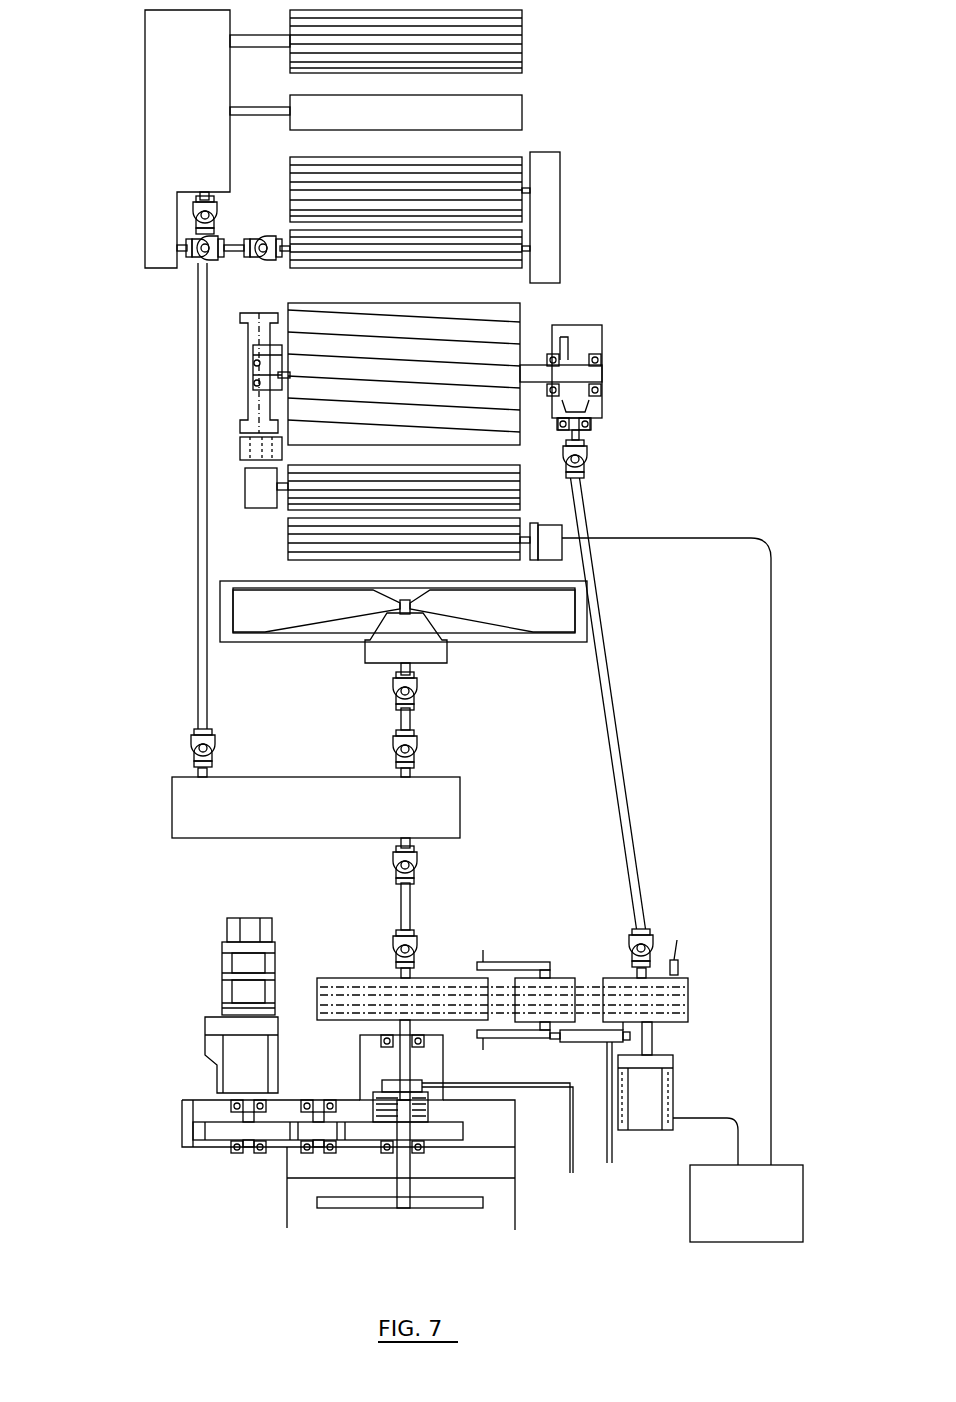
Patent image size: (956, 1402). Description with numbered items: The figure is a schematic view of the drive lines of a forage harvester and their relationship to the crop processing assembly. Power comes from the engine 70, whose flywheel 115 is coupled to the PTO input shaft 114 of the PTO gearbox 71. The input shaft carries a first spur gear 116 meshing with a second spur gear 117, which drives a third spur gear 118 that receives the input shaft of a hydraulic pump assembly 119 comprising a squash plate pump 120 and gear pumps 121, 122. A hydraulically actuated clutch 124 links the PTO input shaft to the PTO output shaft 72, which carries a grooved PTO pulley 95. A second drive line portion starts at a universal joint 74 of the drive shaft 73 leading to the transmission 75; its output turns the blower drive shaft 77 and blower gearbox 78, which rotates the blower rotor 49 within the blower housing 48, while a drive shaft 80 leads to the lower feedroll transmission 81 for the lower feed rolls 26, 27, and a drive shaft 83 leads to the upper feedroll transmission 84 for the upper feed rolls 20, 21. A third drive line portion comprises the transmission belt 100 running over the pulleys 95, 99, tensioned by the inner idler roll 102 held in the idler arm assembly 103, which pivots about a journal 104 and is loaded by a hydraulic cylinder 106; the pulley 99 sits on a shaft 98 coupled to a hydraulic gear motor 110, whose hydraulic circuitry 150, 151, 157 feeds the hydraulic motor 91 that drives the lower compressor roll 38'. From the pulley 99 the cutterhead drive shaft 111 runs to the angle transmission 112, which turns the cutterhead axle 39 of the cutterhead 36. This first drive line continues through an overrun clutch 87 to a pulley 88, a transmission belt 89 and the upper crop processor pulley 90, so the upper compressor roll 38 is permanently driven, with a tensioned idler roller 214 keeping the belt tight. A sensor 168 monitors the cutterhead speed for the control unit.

The lower feedroll transmission 81 is at (163, 117).
The forward lower feed roll 26 is at (520, 50).
The rear lower feed roll 27 is at (520, 116).
The upper forward feed roll 20 is at (292, 178).
The upper rear feed roll 21 is at (330, 258).
The upper feedroll transmission 84 is at (553, 212).
The drive shaft 83 is at (229, 262).
The drive shaft 80 is at (200, 460).
The pulley 88 is at (240, 418).
The overrun clutch 87 is at (255, 377).
The cutterhead 36 is at (520, 310).
The transmission belt 89 is at (250, 448).
The tensioned idler roller 214 is at (250, 455).
The upper crop processor pulley 90 is at (246, 490).
The upper compressor roll 38 is at (425, 487).
The lower compressor roll 38' is at (467, 521).
The hydraulic motor 91 is at (560, 528).
The hydraulic circuitry 157 is at (771, 735).
The angle transmission 112 is at (603, 404).
The cutterhead axle 39 is at (596, 372).
The universal joint 74 is at (590, 455).
The cutterhead drive shaft 111 is at (620, 750).
The blower housing 48 is at (575, 642).
The blower rotor 49 is at (537, 632).
The blower gearbox 78 is at (373, 658).
The blower drive shaft 77 is at (411, 718).
The transmission 75 is at (172, 800).
The drive shaft 73 is at (410, 900).
The transmission belt 100 is at (592, 985).
The PTO pulley 95 is at (343, 978).
The inner idler roll 102 is at (565, 978).
The idler arm assembly 103 is at (518, 962).
The journal 104 is at (485, 1040).
The pulley 99 is at (688, 1003).
The sensor 168 is at (680, 970).
The shaft 98 is at (652, 1037).
The hydraulic cylinder 106 is at (585, 1042).
The hydraulic gear motor 110 is at (660, 1098).
The hydraulic circuitry 150 is at (737, 1145).
The hydraulic circuitry 151 is at (690, 1203).
The gear pump 122 is at (233, 930).
The gear pump 121 is at (223, 960).
The hydraulic pump assembly 119 is at (158, 1002).
The squash plate pump 120 is at (212, 1040).
The PTO output shaft 72 is at (398, 1030).
The hydraulically actuated clutch 124 is at (425, 1106).
The PTO gearbox 71 is at (182, 1118).
The engine 70 is at (292, 1205).
The first spur gear 116 is at (464, 1132).
The third spur gear 118 is at (200, 1122).
The second spur gear 117 is at (307, 1120).
The PTO input shaft 114 is at (402, 1185).
The flywheel 115 is at (324, 1205).